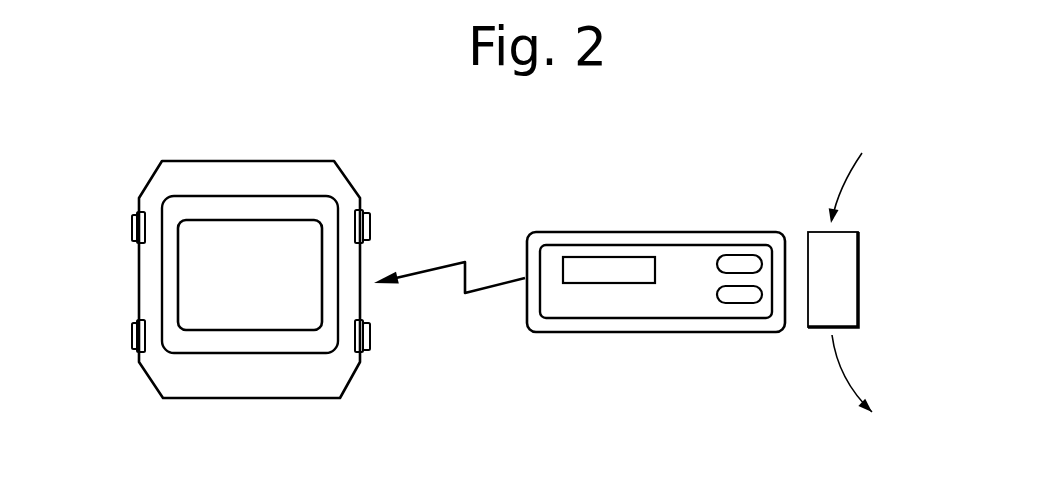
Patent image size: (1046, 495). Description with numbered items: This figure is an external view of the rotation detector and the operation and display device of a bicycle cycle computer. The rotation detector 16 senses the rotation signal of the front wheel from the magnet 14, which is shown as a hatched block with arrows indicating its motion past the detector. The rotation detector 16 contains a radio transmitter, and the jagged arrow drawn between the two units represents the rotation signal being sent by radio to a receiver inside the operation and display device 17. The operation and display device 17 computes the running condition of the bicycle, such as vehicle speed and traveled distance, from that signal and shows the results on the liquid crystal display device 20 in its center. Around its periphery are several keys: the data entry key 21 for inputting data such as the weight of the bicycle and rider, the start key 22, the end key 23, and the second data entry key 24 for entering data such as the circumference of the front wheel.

The magnet 14 is at (858, 276).
The rotation detector 16 is at (690, 228).
The operation and display device 17 is at (266, 158).
The liquid crystal display device 20 is at (264, 295).
The data entry key 21 is at (132, 224).
The start key 22 is at (132, 338).
The end key 23 is at (370, 220).
The second data entry key 24 is at (370, 336).